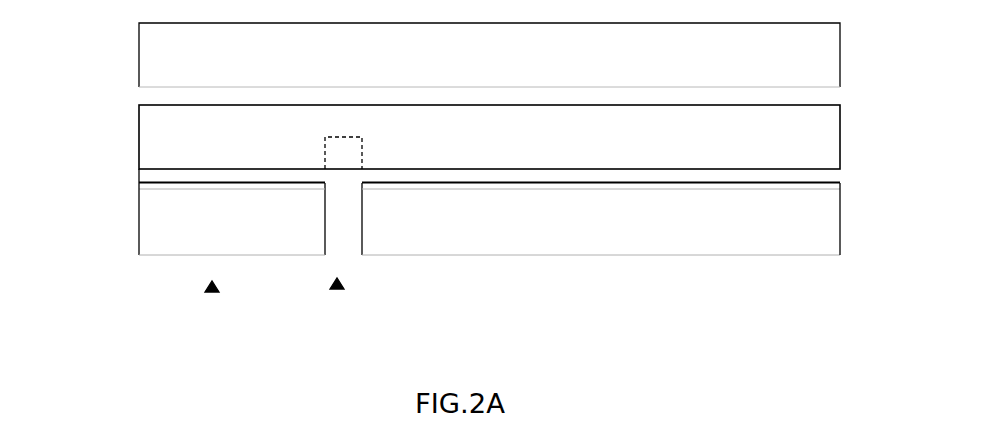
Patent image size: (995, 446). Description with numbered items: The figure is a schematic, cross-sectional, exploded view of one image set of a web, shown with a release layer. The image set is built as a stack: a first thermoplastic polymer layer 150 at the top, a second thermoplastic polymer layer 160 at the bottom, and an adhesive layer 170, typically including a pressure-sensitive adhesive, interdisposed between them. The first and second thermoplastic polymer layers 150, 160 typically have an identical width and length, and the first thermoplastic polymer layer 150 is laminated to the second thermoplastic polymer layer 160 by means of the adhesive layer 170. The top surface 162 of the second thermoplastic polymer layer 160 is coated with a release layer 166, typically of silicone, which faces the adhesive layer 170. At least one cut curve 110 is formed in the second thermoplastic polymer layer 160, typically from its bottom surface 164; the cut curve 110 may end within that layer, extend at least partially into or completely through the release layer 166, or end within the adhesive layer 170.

The first thermoplastic polymer layer 150 is at (175, 55).
The adhesive layer 170 is at (162, 139).
The release layer 166 is at (139, 183).
The top surface 162 is at (139, 189).
The bottom surface 164 is at (159, 256).
The second thermoplastic polymer layer 160 is at (211, 293).
The cut curve 110 is at (337, 291).